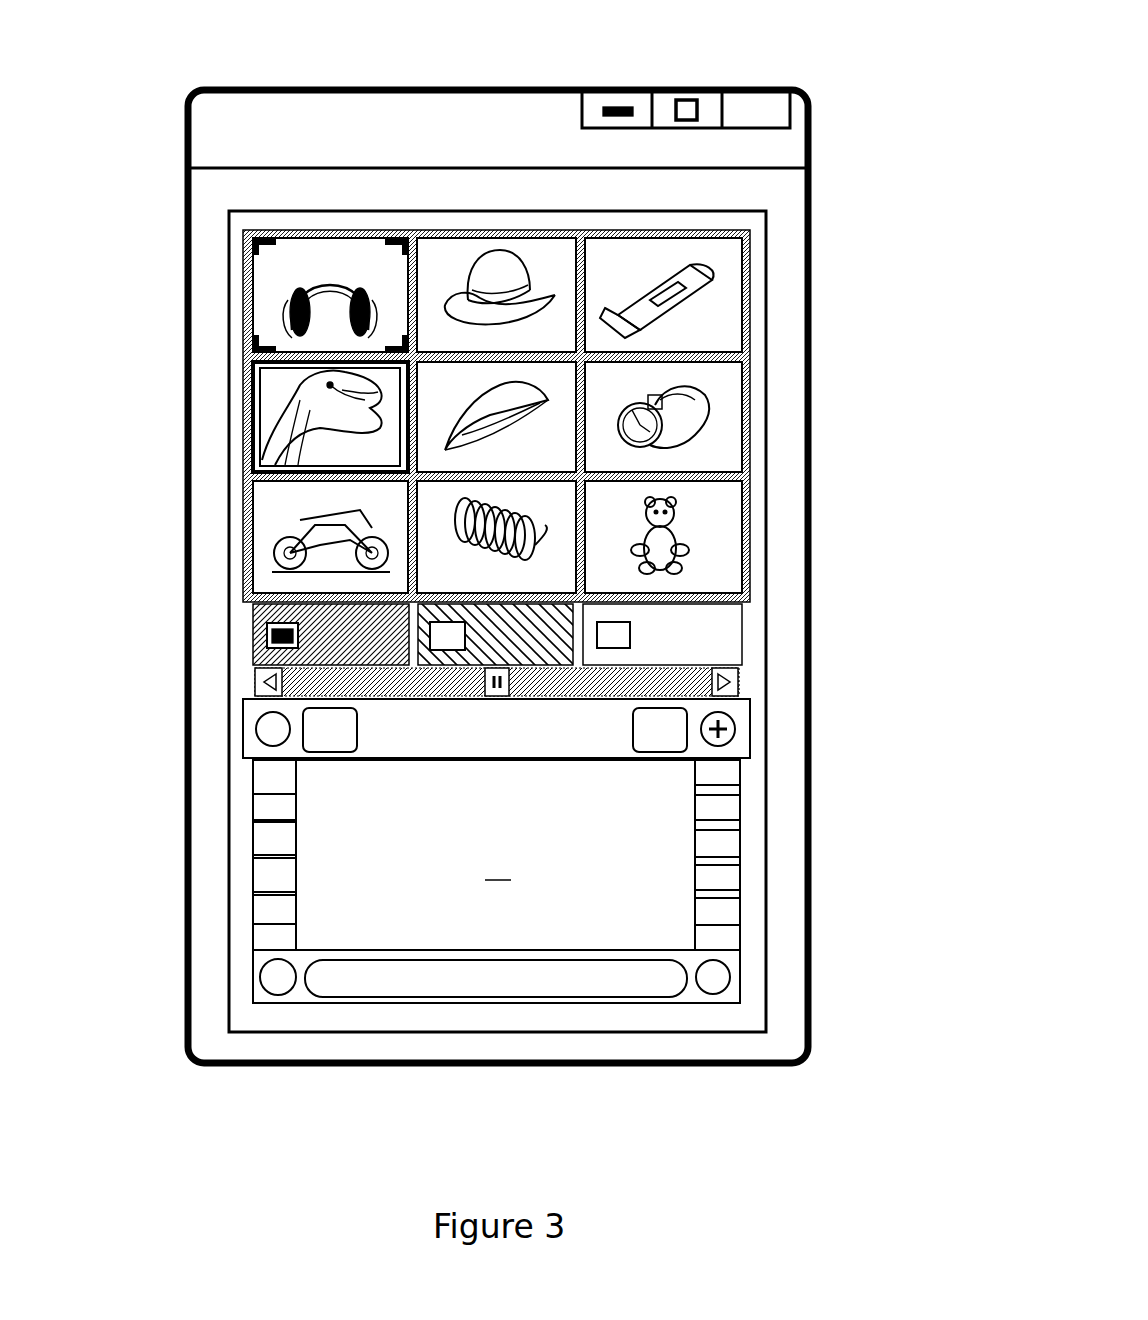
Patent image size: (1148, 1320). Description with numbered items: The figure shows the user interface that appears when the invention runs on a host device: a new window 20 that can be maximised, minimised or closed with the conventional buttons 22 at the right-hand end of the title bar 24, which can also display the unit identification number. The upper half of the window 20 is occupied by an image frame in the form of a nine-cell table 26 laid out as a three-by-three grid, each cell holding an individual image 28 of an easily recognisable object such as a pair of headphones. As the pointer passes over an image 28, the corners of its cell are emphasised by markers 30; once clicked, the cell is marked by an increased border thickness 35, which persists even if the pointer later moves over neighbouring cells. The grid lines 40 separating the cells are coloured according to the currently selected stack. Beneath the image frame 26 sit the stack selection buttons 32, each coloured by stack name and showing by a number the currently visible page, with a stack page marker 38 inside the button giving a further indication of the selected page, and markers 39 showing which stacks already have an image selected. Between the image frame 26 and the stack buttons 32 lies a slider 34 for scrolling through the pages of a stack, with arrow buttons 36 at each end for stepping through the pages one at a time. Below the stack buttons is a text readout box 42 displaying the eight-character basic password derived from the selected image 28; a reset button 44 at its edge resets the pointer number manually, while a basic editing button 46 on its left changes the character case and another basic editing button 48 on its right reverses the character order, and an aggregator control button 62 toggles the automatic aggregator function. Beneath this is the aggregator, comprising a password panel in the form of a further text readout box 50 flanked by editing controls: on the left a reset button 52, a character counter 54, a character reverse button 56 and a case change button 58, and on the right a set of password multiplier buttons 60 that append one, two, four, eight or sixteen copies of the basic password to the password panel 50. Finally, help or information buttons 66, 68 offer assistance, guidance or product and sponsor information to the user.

The window 20 is at (165, 1107).
The buttons 22 is at (700, 90).
The title bar 24 is at (336, 105).
The nine-cell table 26 is at (499, 380).
The image 28 is at (290, 292).
The markers 30 is at (253, 250).
The stack selection buttons 32 is at (531, 624).
The slider 34 is at (403, 637).
The increased border thickness 35 is at (253, 405).
The arrow buttons 36 is at (255, 675).
The stack page marker 38 is at (673, 640).
The markers 39 is at (270, 633).
The grid lines 40 is at (745, 355).
The text readout box 42 is at (580, 758).
The reset button 44 is at (256, 728).
The basic editing button 46 is at (300, 748).
The basic editing button 48 is at (685, 748).
The text readout box 50 is at (496, 881).
The reset button 52 is at (258, 840).
The character counter 54 is at (258, 782).
The character reverse button 56 is at (258, 922).
The case change button 58 is at (258, 877).
The password multiplier buttons 60 is at (740, 772).
The aggregator control button 62 is at (735, 728).
The help or information button 66 is at (716, 994).
The help or information button 68 is at (288, 992).